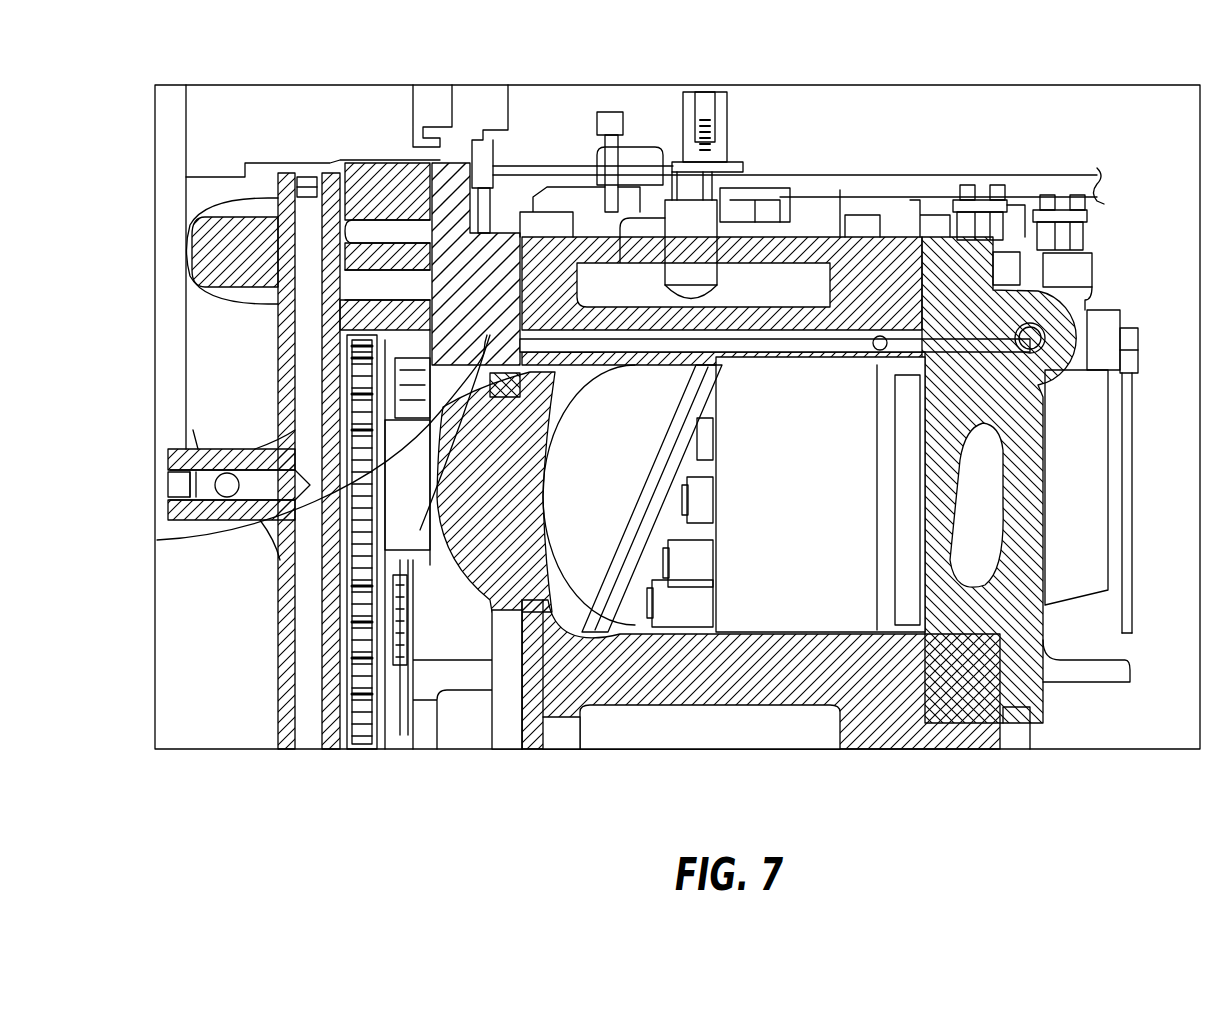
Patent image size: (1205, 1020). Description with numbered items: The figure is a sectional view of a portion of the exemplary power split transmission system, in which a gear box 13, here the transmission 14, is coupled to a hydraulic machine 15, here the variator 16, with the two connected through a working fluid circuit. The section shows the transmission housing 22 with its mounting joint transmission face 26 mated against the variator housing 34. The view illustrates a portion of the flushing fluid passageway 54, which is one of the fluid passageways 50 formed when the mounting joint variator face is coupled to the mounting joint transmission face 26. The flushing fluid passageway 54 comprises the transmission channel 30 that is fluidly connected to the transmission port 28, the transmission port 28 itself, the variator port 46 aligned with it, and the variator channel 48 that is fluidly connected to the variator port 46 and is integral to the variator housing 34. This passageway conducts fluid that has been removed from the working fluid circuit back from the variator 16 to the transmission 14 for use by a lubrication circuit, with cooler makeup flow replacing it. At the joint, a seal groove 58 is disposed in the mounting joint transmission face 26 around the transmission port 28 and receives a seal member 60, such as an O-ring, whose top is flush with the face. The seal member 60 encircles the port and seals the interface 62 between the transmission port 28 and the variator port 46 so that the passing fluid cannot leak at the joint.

The gear box 13 is at (497, 240).
The transmission 14 is at (585, 327).
The hydraulic machine 15 is at (565, 730).
The variator 16 is at (568, 701).
The transmission housing 22 is at (446, 205).
The mounting joint transmission face 26 is at (540, 660).
The transmission port 28 is at (296, 445).
The transmission channel 30 is at (345, 361).
The variator housing 34 is at (600, 235).
The variator port 46 is at (590, 330).
The variator channel 48 is at (792, 340).
The fluid passageway 50 is at (858, 320).
The flushing fluid passageway 54 is at (346, 280).
The seal groove 58 is at (405, 580).
The seal member 60 is at (548, 295).
The interface 62 is at (621, 440).